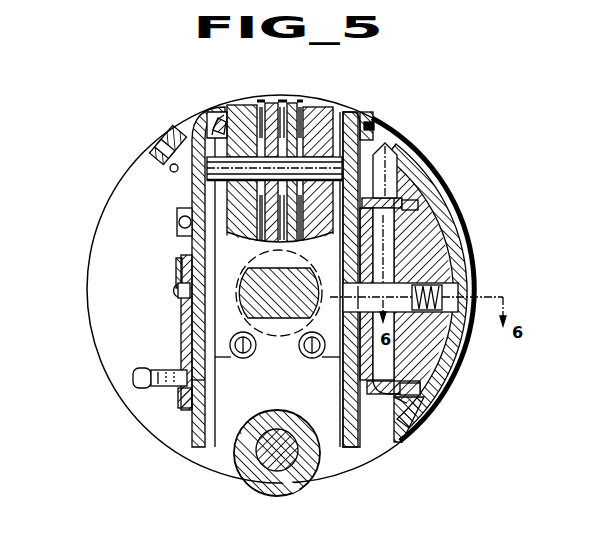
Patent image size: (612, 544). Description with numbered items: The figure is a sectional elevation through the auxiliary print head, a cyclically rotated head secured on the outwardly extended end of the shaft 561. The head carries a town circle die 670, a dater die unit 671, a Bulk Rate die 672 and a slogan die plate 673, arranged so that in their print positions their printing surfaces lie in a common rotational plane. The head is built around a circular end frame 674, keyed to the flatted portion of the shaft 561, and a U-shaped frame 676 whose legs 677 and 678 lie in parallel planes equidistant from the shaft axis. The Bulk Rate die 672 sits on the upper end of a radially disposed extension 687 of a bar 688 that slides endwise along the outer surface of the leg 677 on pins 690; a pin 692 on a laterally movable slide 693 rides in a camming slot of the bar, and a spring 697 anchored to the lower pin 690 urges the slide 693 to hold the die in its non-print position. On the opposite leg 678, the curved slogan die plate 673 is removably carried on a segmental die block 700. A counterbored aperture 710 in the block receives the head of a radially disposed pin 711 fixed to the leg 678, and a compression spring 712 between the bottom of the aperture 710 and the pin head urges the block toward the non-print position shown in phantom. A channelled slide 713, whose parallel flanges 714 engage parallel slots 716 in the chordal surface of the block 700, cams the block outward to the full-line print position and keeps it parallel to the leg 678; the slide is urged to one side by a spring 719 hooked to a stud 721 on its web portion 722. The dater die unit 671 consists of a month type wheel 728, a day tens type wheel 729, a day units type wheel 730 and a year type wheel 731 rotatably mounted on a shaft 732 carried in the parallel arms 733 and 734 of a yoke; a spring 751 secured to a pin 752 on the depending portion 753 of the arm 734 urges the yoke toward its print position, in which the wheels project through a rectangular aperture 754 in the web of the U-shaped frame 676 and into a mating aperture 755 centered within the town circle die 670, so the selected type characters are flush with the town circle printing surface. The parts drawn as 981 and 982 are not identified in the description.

The shaft 561 is at (265, 280).
The town circle die 670 is at (363, 125).
The dater die unit 671 is at (312, 92).
The Bulk Rate die 672 is at (155, 141).
The slogan die plate 673 is at (458, 382).
The circular end frame 674 is at (172, 446).
The U-shaped frame 676 is at (372, 128).
The leg 677 is at (199, 450).
The leg 678 is at (350, 450).
The radially disposed extension 687 is at (172, 172).
The bar 688 is at (181, 340).
The pins 690 is at (177, 220).
The pin 692 is at (178, 290).
The slide 693 is at (176, 265).
The spring 697 is at (133, 377).
The segmental die block 700 is at (420, 243).
The counterbored aperture 710 is at (458, 284).
The pin 711 is at (352, 286).
The compression spring 712 is at (460, 346).
The channelled slide 713 is at (380, 413).
The flanges 714 is at (408, 198).
The slots 716 is at (418, 200).
The spring 719 is at (285, 372).
The stud 721 is at (326, 357).
The web portion 722 is at (368, 385).
The month type wheel 728 is at (322, 108).
The day tens numeral type wheel 729 is at (293, 103).
The day units numeral type wheel 730 is at (272, 103).
The year numeral type wheel 731 is at (247, 105).
The shaft 732 is at (330, 165).
The arm 733 is at (345, 240).
The arm 734 is at (269, 289).
The spring 751 is at (256, 347).
The pin 752 is at (232, 356).
The depending portion 753 is at (208, 380).
The rectangular aperture 754 is at (220, 114).
The rectangular aperture 755 is at (228, 108).
The crank disc 981 is at (289, 483).
The crank pin 982 is at (262, 470).